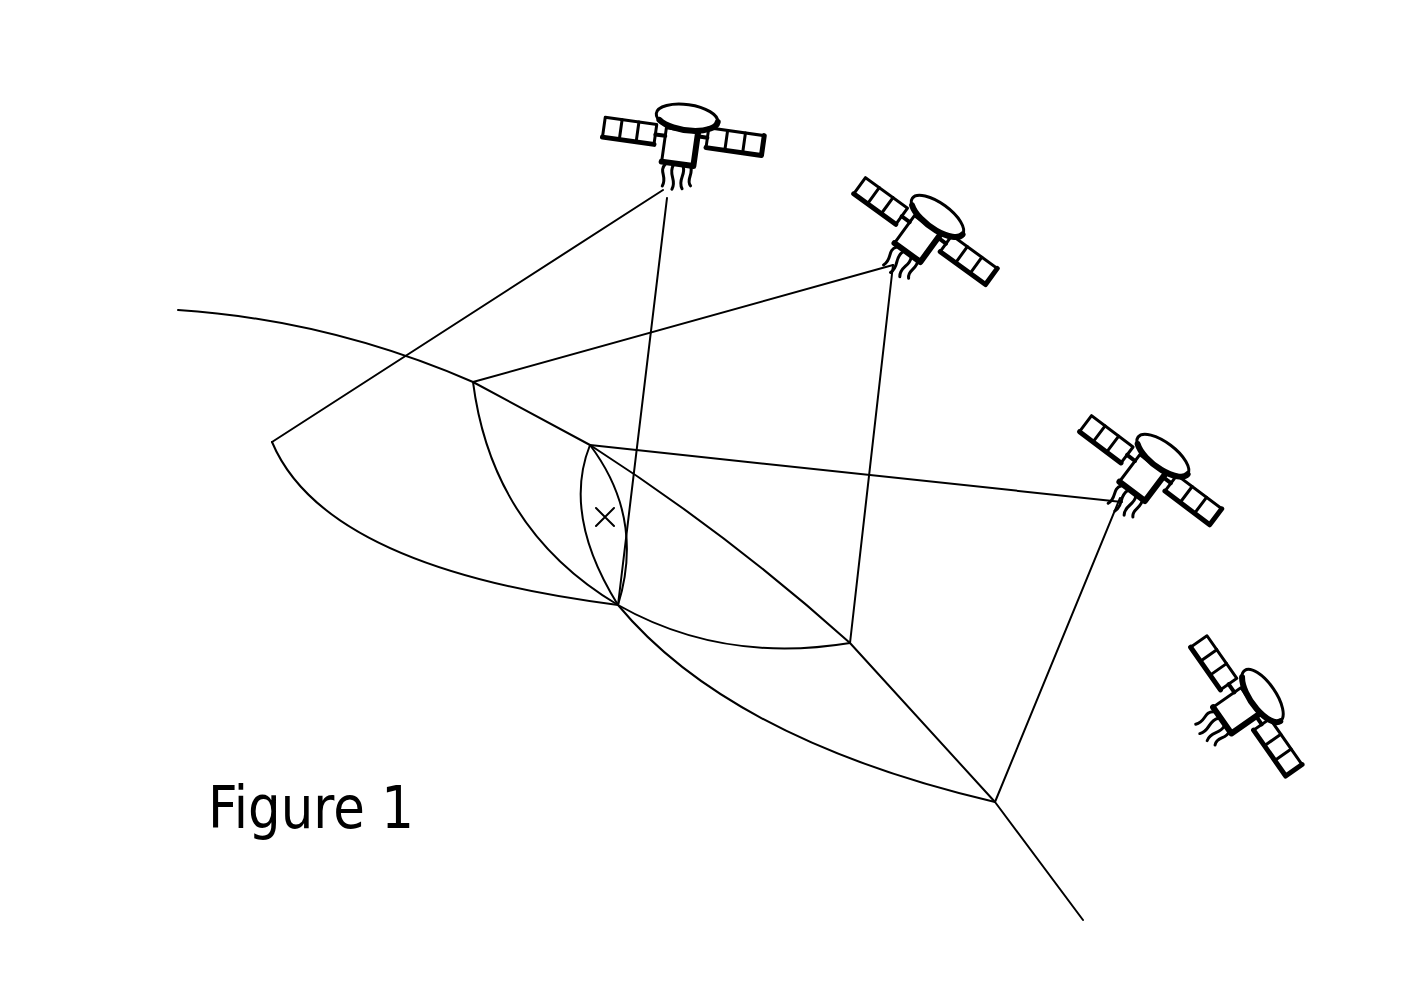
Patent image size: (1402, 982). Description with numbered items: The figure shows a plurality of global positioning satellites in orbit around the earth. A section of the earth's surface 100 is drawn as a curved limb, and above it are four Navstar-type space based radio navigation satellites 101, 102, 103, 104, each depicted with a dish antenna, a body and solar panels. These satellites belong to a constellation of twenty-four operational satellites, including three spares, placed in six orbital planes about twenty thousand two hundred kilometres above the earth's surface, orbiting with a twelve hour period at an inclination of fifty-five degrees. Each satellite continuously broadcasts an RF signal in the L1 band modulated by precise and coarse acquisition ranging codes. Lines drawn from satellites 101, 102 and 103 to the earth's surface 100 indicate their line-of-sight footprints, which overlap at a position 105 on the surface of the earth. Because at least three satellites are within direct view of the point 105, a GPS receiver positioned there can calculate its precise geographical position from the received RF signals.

The earth's surface 100 is at (240, 333).
The global positioning satellite 101 is at (690, 115).
The global positioning satellite 102 is at (940, 216).
The global positioning satellite 103 is at (1170, 455).
The global positioning satellite 104 is at (1268, 694).
The position on the surface of the earth 105 is at (612, 517).